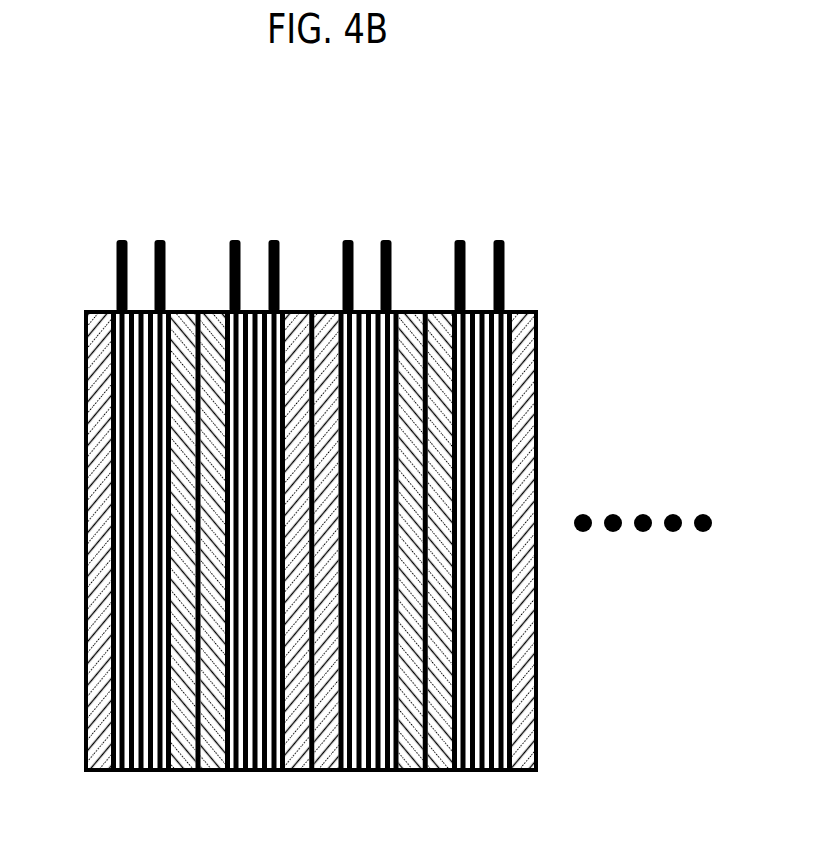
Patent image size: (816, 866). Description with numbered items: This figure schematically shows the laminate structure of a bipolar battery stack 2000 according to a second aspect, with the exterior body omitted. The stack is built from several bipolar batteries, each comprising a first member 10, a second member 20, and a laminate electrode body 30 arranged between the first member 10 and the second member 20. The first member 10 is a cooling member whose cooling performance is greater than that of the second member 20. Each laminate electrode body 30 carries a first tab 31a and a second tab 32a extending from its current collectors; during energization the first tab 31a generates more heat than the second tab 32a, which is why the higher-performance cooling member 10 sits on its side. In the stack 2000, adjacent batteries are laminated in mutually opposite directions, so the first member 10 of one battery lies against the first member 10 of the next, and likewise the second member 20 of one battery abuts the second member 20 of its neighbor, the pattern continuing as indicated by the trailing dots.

The bipolar battery stack 2000 is at (343, 125).
The first member 10 is at (105, 748).
The second member 20 is at (180, 742).
The laminate electrode body 30 is at (143, 743).
The first tab 31a is at (122, 240).
The second tab 32a is at (460, 240).